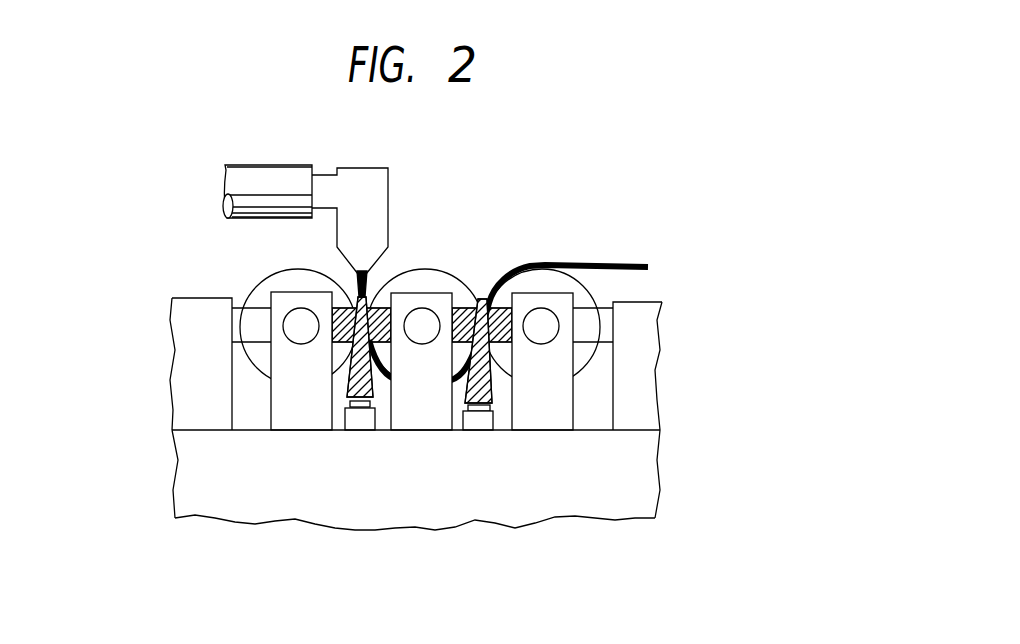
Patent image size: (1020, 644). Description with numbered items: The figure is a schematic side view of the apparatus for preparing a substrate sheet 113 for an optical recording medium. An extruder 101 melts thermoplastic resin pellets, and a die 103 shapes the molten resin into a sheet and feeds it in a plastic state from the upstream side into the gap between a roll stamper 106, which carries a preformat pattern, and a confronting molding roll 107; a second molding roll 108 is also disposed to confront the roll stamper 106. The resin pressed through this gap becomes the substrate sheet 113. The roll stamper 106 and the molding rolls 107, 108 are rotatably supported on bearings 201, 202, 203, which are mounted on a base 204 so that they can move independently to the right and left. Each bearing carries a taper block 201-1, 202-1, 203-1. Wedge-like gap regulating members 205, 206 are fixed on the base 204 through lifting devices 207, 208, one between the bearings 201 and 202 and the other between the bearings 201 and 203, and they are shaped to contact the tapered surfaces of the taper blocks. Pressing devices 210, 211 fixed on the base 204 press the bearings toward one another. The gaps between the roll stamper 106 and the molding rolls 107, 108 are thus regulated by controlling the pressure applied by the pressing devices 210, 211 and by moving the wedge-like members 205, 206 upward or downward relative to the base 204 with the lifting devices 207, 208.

The extruder 101 is at (267, 162).
The die 103 is at (350, 205).
The roll stamper 106 is at (425, 303).
The molding roll 107 is at (271, 316).
The molding roll 108 is at (476, 354).
The substrate sheet 113 is at (520, 295).
The bearing 201 is at (417, 447).
The taper block 201-1 is at (468, 300).
The bearing 202 is at (277, 427).
The taper block 202-1 is at (306, 319).
The bearing 203 is at (547, 438).
The taper block 203-1 is at (553, 303).
The base 204 is at (456, 480).
The wedge-like gap regulating member 205 is at (361, 496).
The wedge-like gap regulating member 206 is at (498, 464).
The lifting device 207 is at (327, 493).
The lifting device 208 is at (461, 509).
The pressing device 210 is at (166, 355).
The pressing device 211 is at (677, 366).